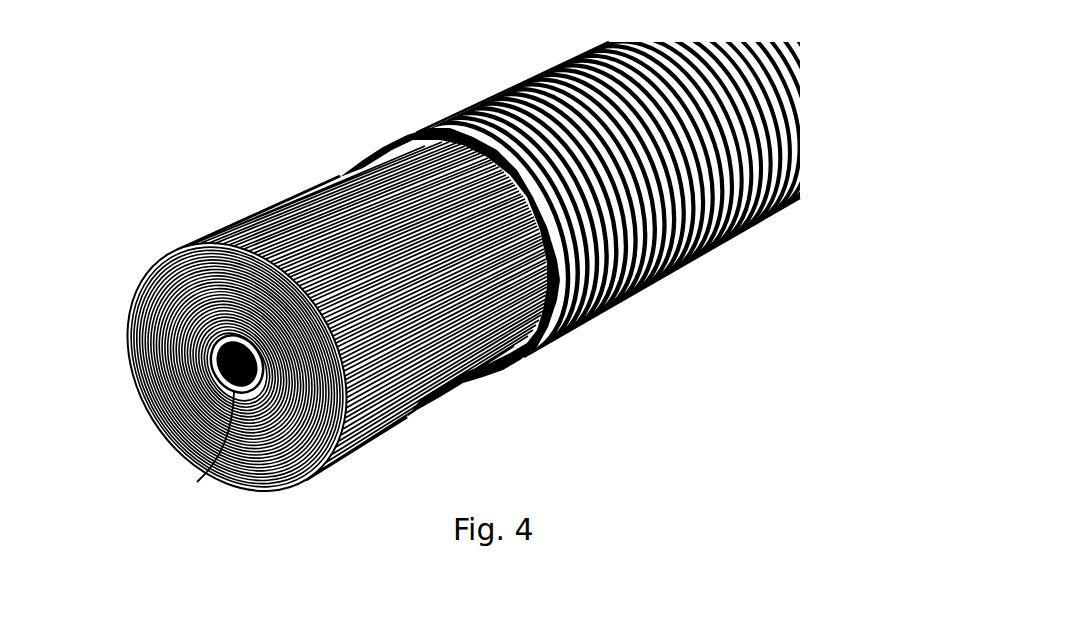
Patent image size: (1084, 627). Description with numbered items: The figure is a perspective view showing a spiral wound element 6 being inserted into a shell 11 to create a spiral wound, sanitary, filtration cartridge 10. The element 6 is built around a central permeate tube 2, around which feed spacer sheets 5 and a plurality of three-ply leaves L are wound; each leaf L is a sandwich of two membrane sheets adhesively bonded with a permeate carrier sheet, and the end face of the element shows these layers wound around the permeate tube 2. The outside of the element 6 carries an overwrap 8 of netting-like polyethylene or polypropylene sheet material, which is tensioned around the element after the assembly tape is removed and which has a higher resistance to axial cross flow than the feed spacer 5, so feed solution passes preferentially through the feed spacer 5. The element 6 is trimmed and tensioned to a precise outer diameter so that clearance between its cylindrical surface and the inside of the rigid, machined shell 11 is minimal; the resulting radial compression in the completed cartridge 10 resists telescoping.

The spiral wound sanitary filtration cartridge 10 is at (418, 88).
The shell 11 is at (523, 82).
The spiral wound element 6 is at (320, 180).
The overwrap 8 is at (240, 217).
The feed spacer sheet 5 is at (185, 290).
The 3-ply leaf L is at (143, 333).
The central permeate tube 2 is at (197, 482).